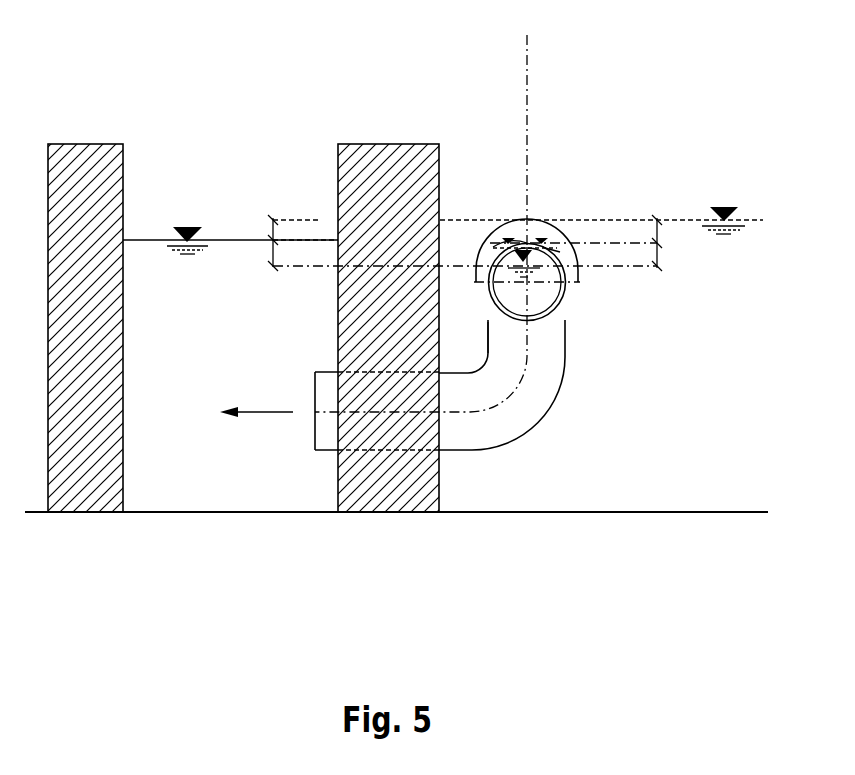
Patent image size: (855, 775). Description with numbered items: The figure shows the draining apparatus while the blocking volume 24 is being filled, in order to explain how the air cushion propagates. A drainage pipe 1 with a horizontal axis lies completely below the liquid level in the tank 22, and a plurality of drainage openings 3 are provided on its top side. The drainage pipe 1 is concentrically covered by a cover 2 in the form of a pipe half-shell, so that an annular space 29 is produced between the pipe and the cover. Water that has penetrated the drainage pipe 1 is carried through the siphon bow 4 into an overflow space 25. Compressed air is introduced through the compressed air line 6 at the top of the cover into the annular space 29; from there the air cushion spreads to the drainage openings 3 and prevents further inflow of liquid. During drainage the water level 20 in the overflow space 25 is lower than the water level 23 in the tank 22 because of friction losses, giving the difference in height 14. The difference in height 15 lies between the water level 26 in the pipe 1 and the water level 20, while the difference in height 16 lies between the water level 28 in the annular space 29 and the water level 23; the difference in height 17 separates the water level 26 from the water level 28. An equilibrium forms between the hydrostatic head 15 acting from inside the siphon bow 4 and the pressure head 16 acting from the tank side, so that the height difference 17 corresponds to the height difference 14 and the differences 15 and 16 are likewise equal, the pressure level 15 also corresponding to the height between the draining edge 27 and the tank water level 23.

The drainage pipe 1 is at (560, 310).
The cover 2 is at (565, 220).
The drainage openings 3 is at (514, 220).
The siphon bow 4 is at (527, 413).
The compressed air line 6 is at (527, 70).
The difference in height 14 is at (268, 228).
The difference in height 15 is at (268, 255).
The difference in height 16 is at (657, 238).
The difference in height 17 is at (662, 258).
The water level 20 is at (183, 225).
The tank 22 is at (687, 482).
The water level 23 is at (725, 205).
The blocking volume 24 is at (548, 258).
The overflow space 25 is at (216, 482).
The water level 26 is at (495, 250).
The draining edge 27 is at (482, 300).
The water level 28 is at (548, 220).
The annular space 29 is at (580, 220).